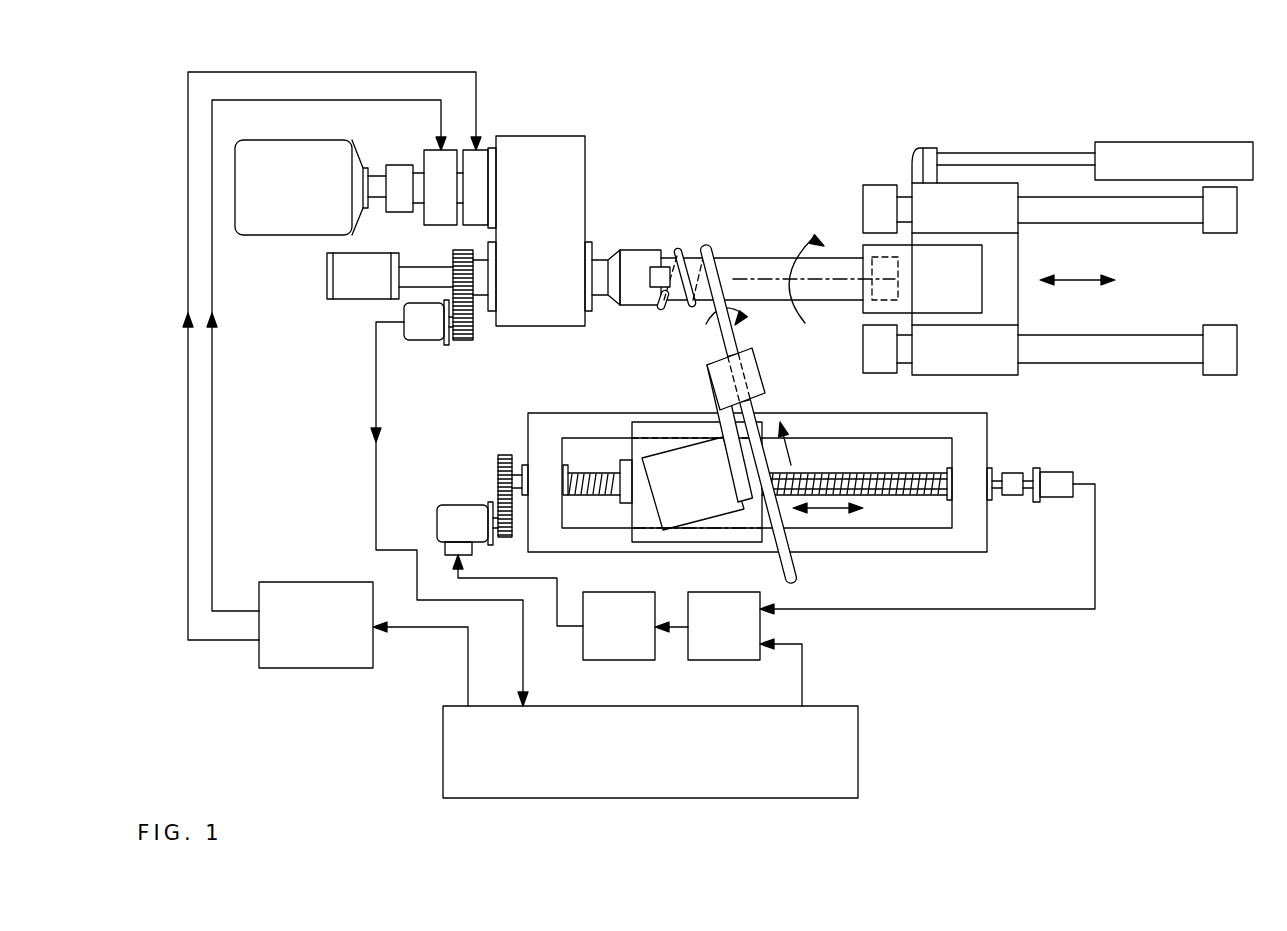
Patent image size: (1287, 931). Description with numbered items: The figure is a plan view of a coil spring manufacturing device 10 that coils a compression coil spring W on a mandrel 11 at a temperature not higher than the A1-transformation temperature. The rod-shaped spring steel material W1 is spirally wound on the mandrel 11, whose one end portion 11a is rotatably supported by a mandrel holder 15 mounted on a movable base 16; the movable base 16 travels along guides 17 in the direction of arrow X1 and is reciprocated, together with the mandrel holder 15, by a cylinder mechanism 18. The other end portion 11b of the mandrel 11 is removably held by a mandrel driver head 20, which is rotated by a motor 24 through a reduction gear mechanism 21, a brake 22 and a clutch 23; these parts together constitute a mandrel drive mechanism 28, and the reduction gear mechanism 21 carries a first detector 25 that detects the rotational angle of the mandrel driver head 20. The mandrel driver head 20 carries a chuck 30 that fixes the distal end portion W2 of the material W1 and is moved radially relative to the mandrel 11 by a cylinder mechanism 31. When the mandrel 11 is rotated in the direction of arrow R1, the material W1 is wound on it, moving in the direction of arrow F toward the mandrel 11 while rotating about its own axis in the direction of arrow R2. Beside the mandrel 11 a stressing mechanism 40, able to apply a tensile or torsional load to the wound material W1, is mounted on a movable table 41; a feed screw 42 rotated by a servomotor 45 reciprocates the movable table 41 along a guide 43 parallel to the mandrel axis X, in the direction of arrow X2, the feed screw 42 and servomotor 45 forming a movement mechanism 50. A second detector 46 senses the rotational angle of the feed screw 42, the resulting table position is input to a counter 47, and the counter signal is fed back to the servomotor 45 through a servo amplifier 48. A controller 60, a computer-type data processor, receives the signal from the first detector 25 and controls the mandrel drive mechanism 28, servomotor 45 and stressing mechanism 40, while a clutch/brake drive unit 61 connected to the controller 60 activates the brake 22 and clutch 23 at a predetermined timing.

The coil spring manufacturing device 10 is at (880, 94).
The mandrel 11 is at (757, 260).
The one end portion of the mandrel 11a is at (903, 289).
The other end portion of the mandrel 11b is at (665, 265).
The mandrel holder 15 is at (868, 257).
The movable base 16 is at (1019, 253).
The guides 17 is at (1143, 212).
The cylinder mechanism 18 is at (1143, 152).
The mandrel driver head 20 is at (632, 250).
The reduction gear mechanism 21 is at (586, 158).
The brake 22 is at (480, 158).
The clutch 23 is at (435, 165).
The motor 24 is at (315, 153).
The first detector 25 is at (419, 338).
The mandrel drive mechanism 28 is at (552, 105).
The chuck 30 is at (652, 286).
The cylinder mechanism 31 is at (346, 292).
The stressing mechanism 40 is at (766, 371).
The movable table 41 is at (645, 430).
The feed screw 42 is at (883, 474).
The guide 43 is at (886, 422).
The servomotor 45 is at (455, 505).
The second detector 46 is at (1052, 472).
The counter 47 is at (723, 660).
The servo amplifier 48 is at (618, 660).
The movement mechanism 50 is at (519, 402).
The controller 60 is at (656, 798).
The clutch/brake drive unit 61 is at (310, 590).
The compression coil spring W is at (706, 244).
The material W1 is at (723, 333).
The distal end portion of the material W2 is at (662, 308).
The rotation direction of the mandrel R1 is at (791, 247).
The rotation direction of the material R2 is at (745, 318).
The axis of the mandrel X is at (843, 281).
The movement direction of the movable base X1 is at (1078, 283).
The movement direction of the movable table X2 is at (827, 511).
The feed direction of the material F is at (793, 455).